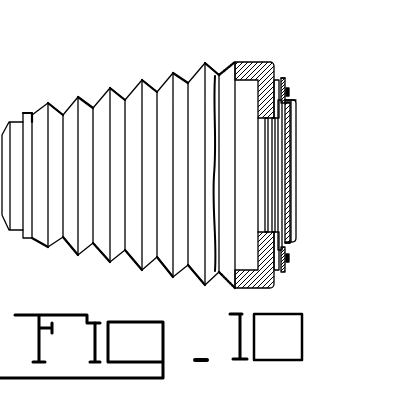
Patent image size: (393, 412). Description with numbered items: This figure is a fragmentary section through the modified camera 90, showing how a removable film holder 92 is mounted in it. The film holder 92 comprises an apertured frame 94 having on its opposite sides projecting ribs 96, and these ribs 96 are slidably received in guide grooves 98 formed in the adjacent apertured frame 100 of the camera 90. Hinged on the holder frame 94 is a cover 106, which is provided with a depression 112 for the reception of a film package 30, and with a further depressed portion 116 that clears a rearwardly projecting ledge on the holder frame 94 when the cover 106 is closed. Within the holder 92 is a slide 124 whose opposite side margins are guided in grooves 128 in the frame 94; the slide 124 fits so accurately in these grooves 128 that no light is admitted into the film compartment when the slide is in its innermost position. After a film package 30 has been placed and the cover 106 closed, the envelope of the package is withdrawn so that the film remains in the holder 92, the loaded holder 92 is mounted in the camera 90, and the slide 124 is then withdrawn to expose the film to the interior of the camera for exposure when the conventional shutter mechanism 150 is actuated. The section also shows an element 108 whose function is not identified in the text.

The film package 30 is at (286, 132).
The camera 90 is at (131, 82).
The film holder 92 is at (291, 80).
The apertured frame 94 is at (282, 95).
The projecting ribs 96 is at (266, 65).
The guide grooves 98 is at (269, 93).
The apertured frame of the camera 100 is at (243, 59).
The cover 106 is at (295, 100).
The O-ring 108 is at (286, 88).
The depression 112 is at (282, 152).
The further depressed portion 116 is at (291, 192).
The slide 124 is at (273, 165).
The grooves 128 is at (288, 110).
The shutter mechanism 150 is at (28, 114).